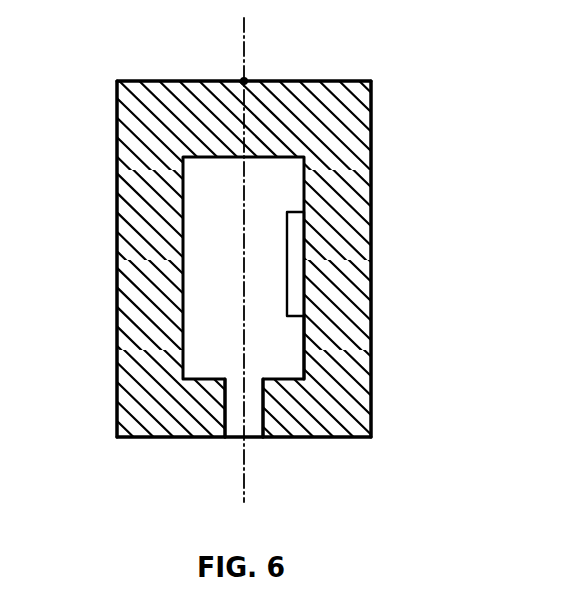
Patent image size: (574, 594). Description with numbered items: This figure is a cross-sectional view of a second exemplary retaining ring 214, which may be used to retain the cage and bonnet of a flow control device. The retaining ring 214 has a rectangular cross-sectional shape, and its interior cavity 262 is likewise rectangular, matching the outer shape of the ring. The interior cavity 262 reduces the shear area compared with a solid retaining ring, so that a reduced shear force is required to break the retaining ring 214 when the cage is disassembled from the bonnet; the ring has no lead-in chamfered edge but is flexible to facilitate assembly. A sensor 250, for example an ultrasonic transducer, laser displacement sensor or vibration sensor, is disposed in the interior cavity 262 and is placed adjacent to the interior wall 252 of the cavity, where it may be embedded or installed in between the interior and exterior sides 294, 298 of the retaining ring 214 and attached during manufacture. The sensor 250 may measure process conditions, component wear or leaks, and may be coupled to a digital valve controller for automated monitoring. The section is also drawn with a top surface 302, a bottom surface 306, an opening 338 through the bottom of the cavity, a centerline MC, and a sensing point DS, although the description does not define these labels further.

The retaining ring 214 is at (410, 97).
The top surface of housing 302 is at (164, 80).
The bottom surface of housing 306 is at (318, 438).
The exterior side 298 is at (117, 211).
The interior side 294 is at (371, 195).
The interior cavity 262 is at (220, 302).
The sensor 250 is at (297, 248).
The interior wall 252 is at (307, 329).
The bottom opening / slot 338 is at (235, 426).
The center axis MC is at (243, 26).
The sensing point DS is at (248, 79).